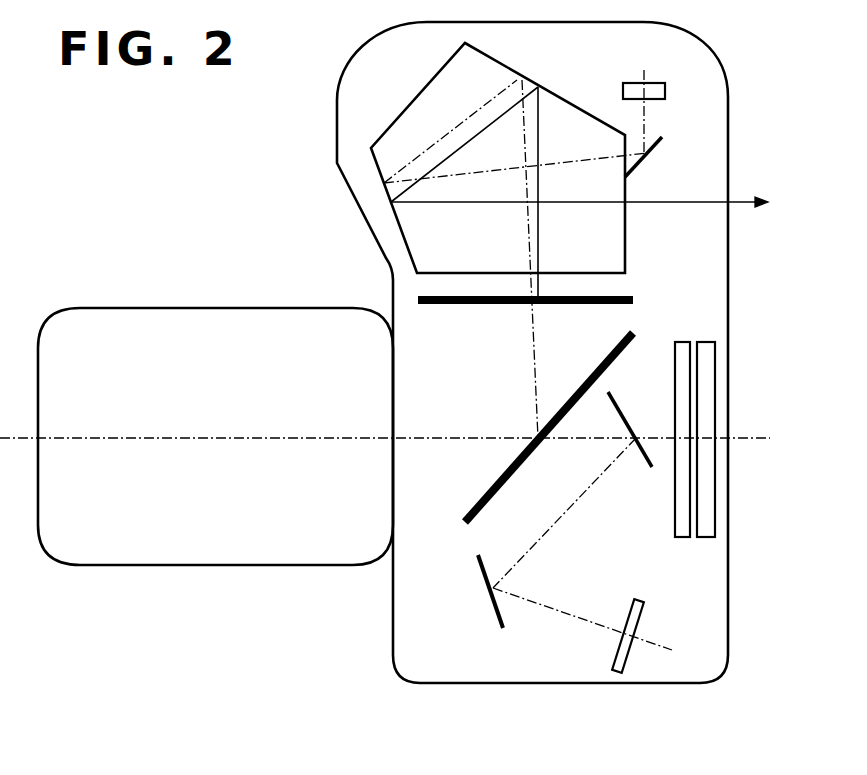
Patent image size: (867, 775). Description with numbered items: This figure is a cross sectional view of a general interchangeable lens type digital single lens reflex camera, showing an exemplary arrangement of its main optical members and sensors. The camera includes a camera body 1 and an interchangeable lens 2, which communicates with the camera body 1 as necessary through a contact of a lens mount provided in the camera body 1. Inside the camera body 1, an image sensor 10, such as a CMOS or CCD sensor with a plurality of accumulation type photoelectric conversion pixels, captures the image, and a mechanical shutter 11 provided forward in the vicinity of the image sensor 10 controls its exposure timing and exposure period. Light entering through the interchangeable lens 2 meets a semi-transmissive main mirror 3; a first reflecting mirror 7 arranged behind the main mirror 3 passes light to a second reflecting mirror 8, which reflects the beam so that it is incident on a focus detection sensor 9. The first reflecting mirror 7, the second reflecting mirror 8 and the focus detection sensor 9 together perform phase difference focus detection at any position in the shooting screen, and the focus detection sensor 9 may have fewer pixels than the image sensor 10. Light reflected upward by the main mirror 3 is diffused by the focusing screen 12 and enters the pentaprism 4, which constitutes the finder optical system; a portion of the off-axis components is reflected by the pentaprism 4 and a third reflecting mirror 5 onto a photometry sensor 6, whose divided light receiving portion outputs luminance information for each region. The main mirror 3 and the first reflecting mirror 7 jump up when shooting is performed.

The camera body 1 is at (335, 117).
The interchangeable lens 2 is at (118, 308).
The main mirror 3 is at (596, 363).
The pentaprism 4 is at (408, 104).
The third reflecting mirror 5 is at (668, 150).
The photometry sensor (AE sensor) 6 is at (632, 82).
The first reflecting mirror 7 is at (624, 410).
The second reflecting mirror 8 is at (480, 572).
The focus detection sensor (AF sensor) 9 is at (641, 596).
The image sensor 10 is at (712, 512).
The mechanical shutter 11 is at (684, 340).
The focusing screen 12 is at (435, 305).